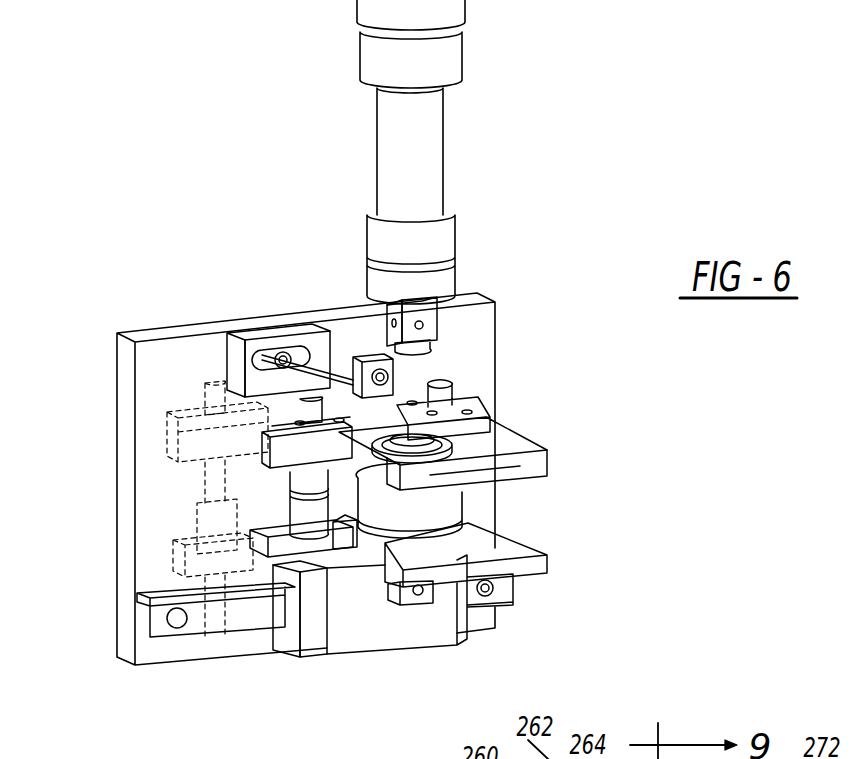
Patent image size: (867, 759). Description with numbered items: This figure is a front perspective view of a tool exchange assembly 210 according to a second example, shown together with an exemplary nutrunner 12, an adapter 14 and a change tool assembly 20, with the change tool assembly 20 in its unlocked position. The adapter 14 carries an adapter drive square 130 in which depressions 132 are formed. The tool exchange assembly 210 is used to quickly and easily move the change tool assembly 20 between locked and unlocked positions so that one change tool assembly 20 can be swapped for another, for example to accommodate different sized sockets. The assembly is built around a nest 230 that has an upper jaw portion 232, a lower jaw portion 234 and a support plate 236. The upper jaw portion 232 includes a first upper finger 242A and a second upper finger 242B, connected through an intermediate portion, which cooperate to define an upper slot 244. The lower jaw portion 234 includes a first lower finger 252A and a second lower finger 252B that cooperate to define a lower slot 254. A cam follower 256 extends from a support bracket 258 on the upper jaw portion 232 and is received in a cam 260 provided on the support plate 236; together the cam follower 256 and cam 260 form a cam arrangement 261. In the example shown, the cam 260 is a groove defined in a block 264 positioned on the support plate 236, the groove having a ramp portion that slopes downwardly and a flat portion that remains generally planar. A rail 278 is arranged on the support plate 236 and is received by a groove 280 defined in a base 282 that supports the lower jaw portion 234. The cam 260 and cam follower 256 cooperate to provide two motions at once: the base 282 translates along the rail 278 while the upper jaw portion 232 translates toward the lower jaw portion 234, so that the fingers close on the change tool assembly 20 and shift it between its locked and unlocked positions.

The nutrunner 12 is at (418, 123).
The adapter 14 is at (440, 245).
The adapter drive square 130 is at (430, 308).
The depressions 132 is at (420, 325).
The tool exchange assembly 210 is at (408, 415).
The support plate 236 is at (167, 512).
The block 264 is at (222, 362).
The cam 260 is at (313, 357).
The upper slot 244 is at (335, 330).
The cam arrangement 261 is at (358, 340).
The support bracket 258 is at (395, 383).
The first upper finger 242A is at (343, 455).
The second upper finger 242B is at (430, 472).
The first lower finger 252A is at (275, 545).
The second lower finger 252B is at (443, 567).
The rail 278 is at (140, 620).
The groove 280 is at (272, 600).
The nest 230 is at (341, 582).
The base 282 is at (387, 628).
The lower slot 254 is at (371, 572).
The lower jaw portion 234 is at (473, 550).
The change tool assembly 20 is at (443, 508).
The upper jaw portion 232 is at (497, 433).
The cam follower 256 is at (357, 443).